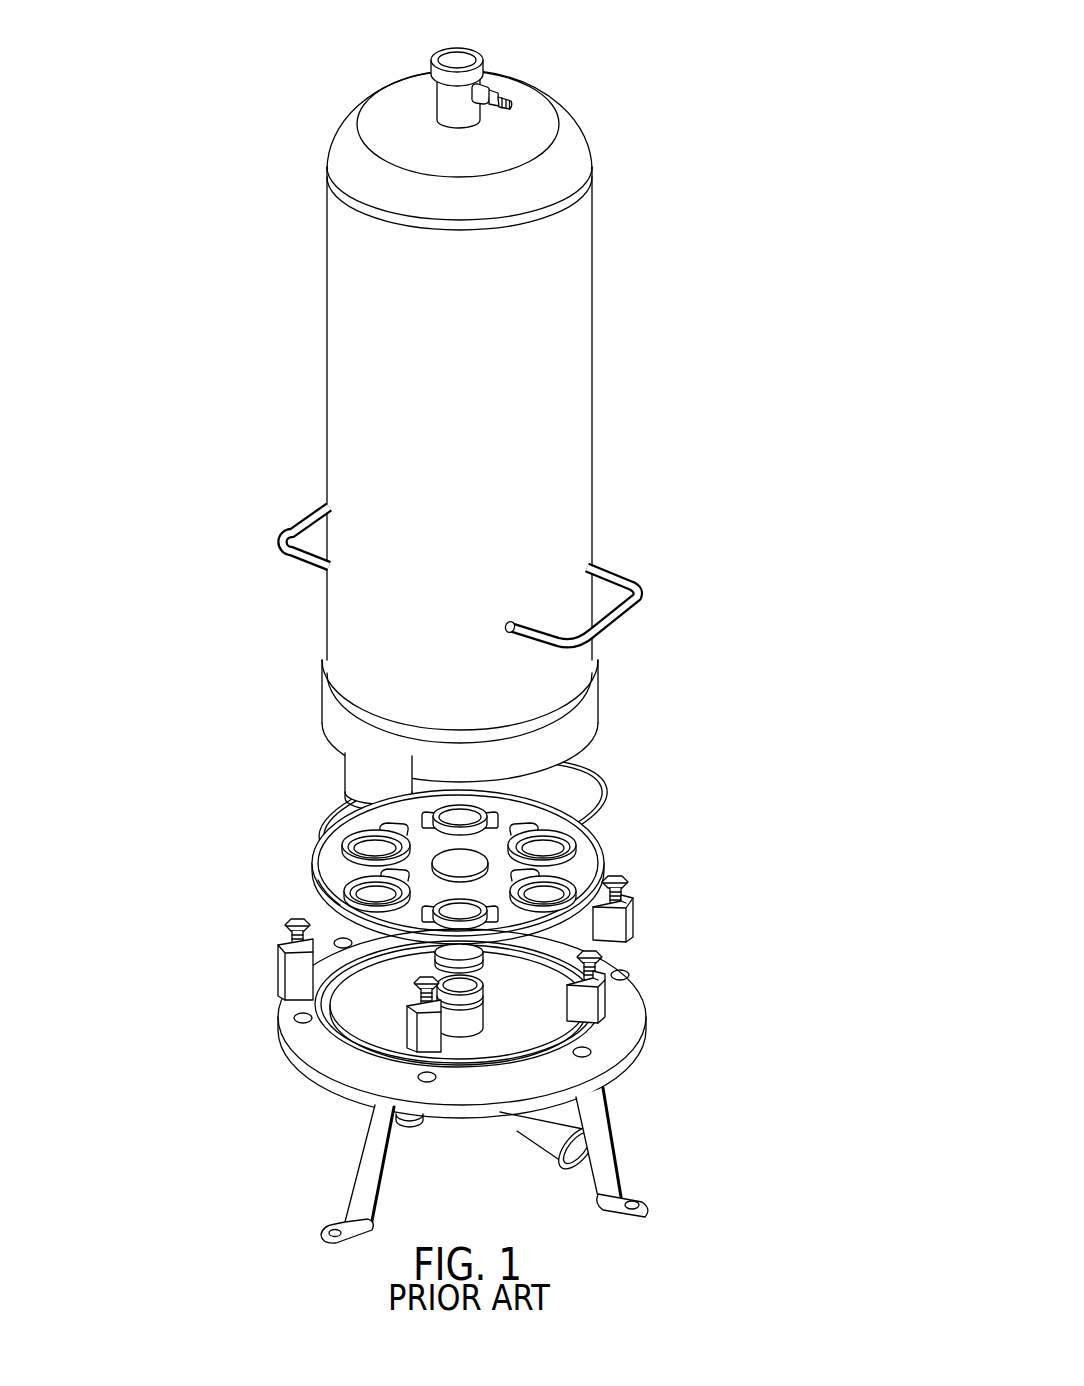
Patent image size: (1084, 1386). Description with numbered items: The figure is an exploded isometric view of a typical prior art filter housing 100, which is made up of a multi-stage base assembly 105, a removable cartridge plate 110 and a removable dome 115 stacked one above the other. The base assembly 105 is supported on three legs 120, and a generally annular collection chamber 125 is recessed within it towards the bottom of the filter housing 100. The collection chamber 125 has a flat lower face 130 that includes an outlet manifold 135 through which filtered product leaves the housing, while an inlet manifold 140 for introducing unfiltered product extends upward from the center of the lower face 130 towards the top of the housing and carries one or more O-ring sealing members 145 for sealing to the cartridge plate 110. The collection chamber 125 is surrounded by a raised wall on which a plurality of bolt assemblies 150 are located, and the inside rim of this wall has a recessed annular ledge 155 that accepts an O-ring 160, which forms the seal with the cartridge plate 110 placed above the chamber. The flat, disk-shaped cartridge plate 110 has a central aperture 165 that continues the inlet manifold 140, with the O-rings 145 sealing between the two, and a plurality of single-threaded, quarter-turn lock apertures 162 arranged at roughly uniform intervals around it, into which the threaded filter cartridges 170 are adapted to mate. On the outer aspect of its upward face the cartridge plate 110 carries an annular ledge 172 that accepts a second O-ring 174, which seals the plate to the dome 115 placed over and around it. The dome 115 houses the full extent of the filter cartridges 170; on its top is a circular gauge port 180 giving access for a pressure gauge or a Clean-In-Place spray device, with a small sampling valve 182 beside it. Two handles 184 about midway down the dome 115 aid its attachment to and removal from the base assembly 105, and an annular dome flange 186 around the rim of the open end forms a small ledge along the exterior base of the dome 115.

The filter housing 100 is at (706, 71).
The base assembly 105 is at (700, 984).
The cartridge plate 110 is at (596, 818).
The dome 115 is at (592, 345).
The legs 120 is at (600, 1178).
The collection chamber 125 is at (330, 1020).
The lower face 130 is at (530, 1036).
The outlet manifold 135 is at (365, 1034).
The inlet manifold 140 is at (470, 1016).
The O-ring sealing members 145 is at (598, 945).
The bolt assemblies 150 is at (292, 972).
The recessed annular ledge 155 is at (402, 1000).
The O-ring 160 is at (380, 996).
The lock apertures 162 is at (378, 877).
The central aperture 165 is at (558, 828).
The filter cartridges 170 is at (345, 770).
The annular ledge 172 is at (320, 885).
The O-ring 174 is at (566, 786).
The gauge port 180 is at (461, 64).
The sampling valve 182 is at (499, 87).
The handles 184 is at (618, 570).
The dome flange 186 is at (590, 712).